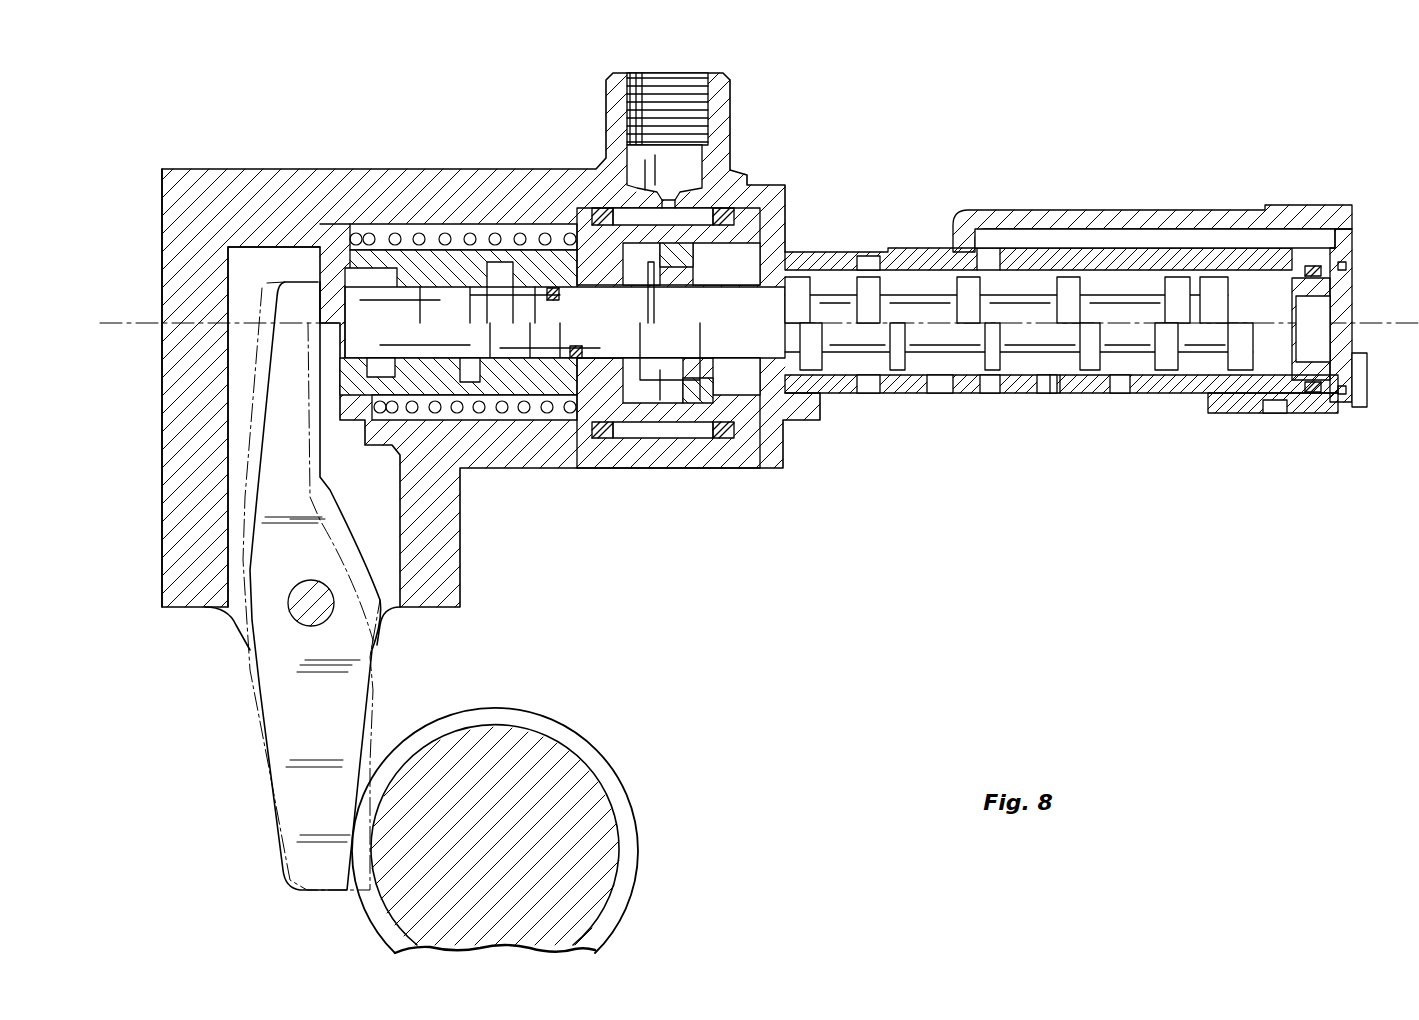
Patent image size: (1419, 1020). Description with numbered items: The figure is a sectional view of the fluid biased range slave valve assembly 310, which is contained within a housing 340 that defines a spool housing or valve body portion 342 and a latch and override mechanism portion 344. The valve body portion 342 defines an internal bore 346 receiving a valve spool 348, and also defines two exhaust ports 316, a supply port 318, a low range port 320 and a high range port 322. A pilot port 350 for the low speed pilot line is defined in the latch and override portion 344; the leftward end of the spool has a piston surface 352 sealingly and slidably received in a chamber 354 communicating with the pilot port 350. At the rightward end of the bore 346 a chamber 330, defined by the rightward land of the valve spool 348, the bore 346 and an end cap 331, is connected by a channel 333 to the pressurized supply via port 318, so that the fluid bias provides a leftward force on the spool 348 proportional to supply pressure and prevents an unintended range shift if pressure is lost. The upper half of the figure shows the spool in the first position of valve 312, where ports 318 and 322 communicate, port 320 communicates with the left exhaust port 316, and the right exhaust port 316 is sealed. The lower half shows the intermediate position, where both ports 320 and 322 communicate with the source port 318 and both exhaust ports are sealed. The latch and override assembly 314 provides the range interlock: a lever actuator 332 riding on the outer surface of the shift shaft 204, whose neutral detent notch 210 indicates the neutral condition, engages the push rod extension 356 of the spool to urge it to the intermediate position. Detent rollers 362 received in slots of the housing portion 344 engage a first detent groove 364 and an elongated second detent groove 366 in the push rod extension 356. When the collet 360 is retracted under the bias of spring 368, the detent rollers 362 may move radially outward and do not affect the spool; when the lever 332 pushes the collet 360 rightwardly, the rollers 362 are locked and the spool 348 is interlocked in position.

The shift shaft 204 is at (588, 878).
The neutral detent notch 210 is at (617, 797).
The fluid biased range slave valve assembly 310 is at (1057, 171).
The valve 312 is at (888, 214).
The latch and override assembly 314 is at (368, 160).
The exhaust port 316 is at (863, 386).
The supply port 318 is at (992, 385).
The low range port 320 is at (947, 383).
The high range port 322 is at (1053, 385).
The chamber 330 is at (1278, 378).
The end cap 331 is at (1357, 295).
The lever actuator 332 is at (302, 737).
The channel 333 is at (1160, 237).
The housing 340 is at (182, 222).
The valve body portion 342 is at (940, 257).
The latch and override mechanism portion 344 is at (233, 176).
The internal bore 346 is at (837, 280).
The valve spool 348 is at (920, 386).
The pilot port 350 is at (703, 120).
The piston surface 352 is at (653, 257).
The chamber 354 is at (600, 432).
The push rod extension 356 is at (643, 340).
The collet 360 is at (427, 258).
The detent roller 362 is at (497, 272).
The first detent groove 364 is at (425, 372).
The second detent groove 366 is at (472, 386).
The spring 368 is at (527, 412).